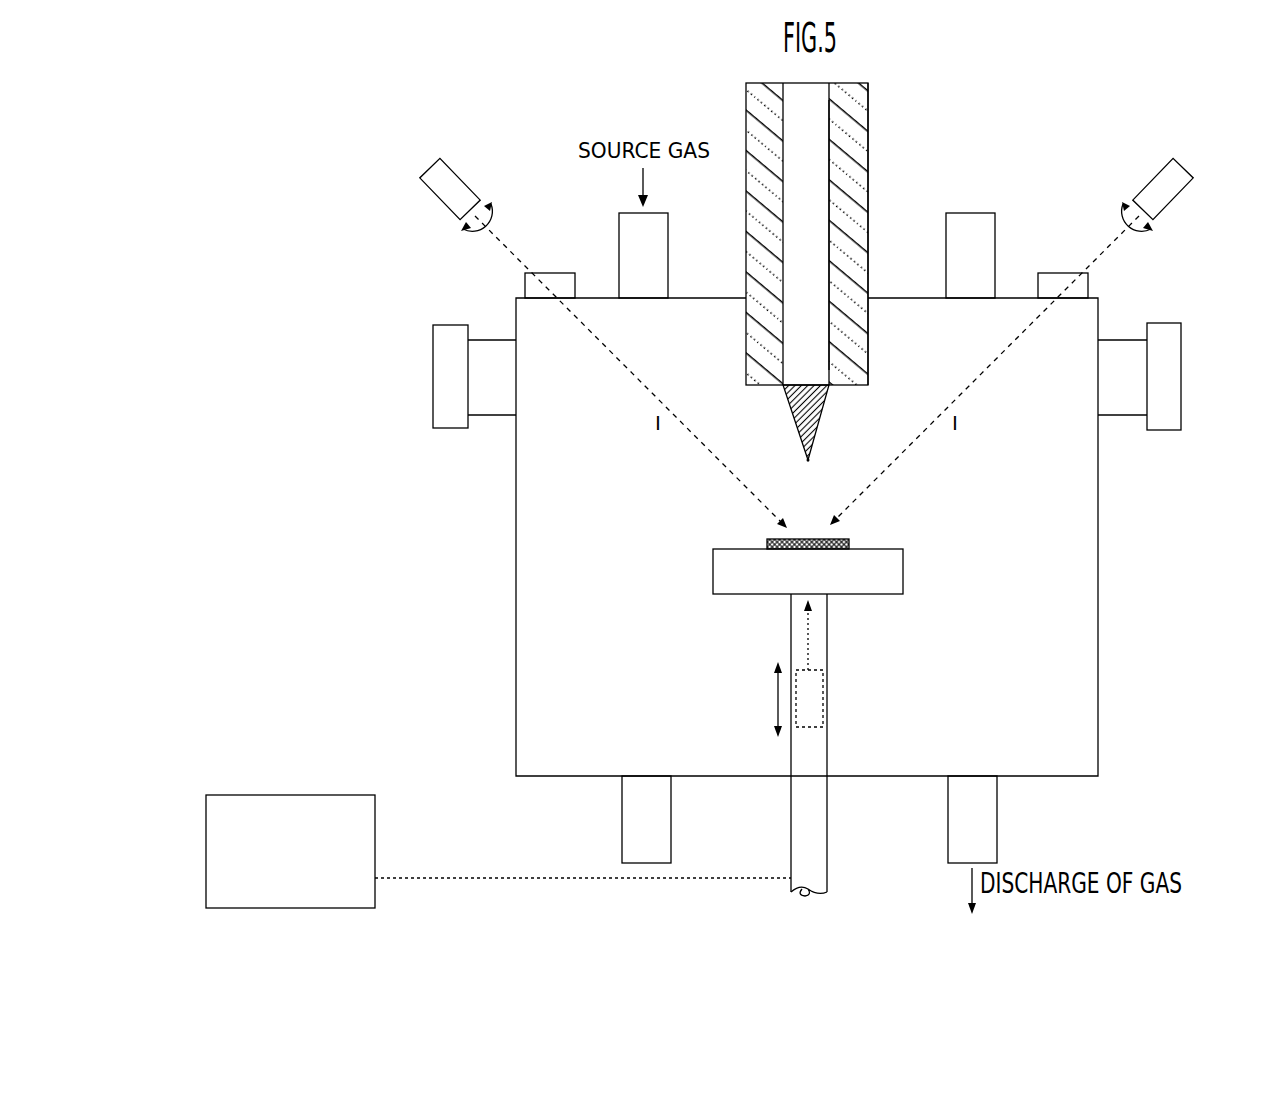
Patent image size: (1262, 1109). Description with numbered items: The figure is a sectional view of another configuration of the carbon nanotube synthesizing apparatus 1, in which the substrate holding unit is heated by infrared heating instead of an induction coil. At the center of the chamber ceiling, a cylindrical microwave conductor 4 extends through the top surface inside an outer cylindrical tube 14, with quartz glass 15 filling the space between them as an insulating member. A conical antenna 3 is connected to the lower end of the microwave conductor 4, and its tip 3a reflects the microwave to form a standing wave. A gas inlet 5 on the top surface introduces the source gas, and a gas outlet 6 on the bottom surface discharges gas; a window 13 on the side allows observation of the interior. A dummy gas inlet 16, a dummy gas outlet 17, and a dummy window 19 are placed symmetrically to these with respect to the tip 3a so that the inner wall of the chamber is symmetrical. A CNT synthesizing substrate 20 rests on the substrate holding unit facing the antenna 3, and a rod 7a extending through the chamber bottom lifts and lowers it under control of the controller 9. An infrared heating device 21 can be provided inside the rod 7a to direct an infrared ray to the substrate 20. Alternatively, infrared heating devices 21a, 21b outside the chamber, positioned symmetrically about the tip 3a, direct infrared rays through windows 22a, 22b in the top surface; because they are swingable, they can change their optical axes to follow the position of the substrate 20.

The carbon nanotube synthesizing apparatus 1 is at (412, 210).
The conical antenna 3 is at (820, 424).
The tip 3a is at (816, 464).
The microwave conductor 4 is at (833, 150).
The gas inlet 5 is at (668, 249).
The gas outlet 6 is at (997, 803).
The rod 7a is at (827, 706).
The controller 9 is at (288, 794).
The window 13 is at (433, 341).
The outer cylindrical tube 14 is at (870, 167).
The quartz glass 15 is at (856, 224).
The dummy gas inlet 16 is at (995, 249).
The dummy gas outlet 17 is at (671, 803).
The dummy window 19 is at (1165, 332).
The CNT synthesizing substrate 20 is at (777, 537).
The infrared heating device 21 is at (826, 672).
The infrared heating device 21a is at (1156, 180).
The infrared heating device 21b is at (464, 179).
The window 22a is at (1088, 285).
The window 22b is at (525, 285).